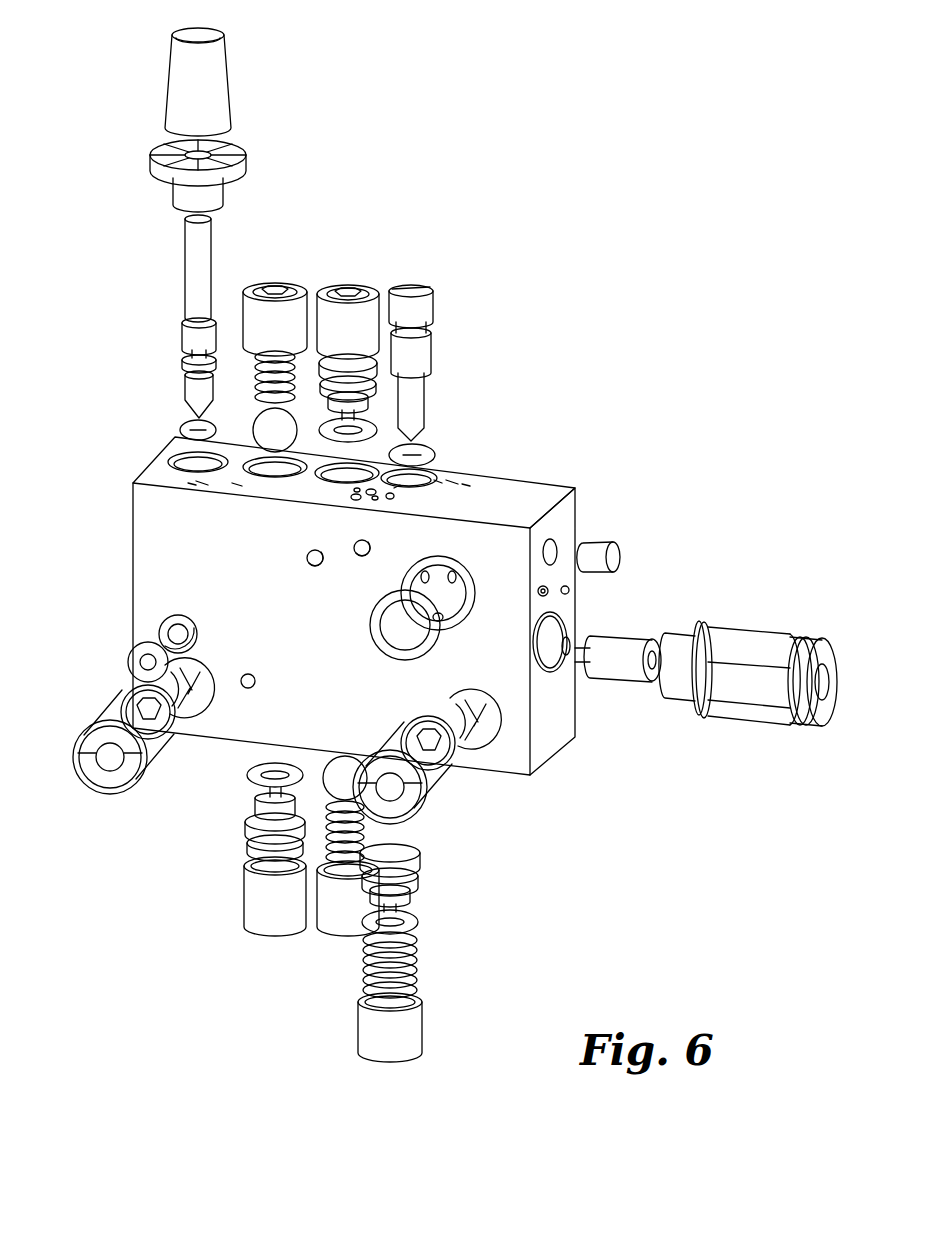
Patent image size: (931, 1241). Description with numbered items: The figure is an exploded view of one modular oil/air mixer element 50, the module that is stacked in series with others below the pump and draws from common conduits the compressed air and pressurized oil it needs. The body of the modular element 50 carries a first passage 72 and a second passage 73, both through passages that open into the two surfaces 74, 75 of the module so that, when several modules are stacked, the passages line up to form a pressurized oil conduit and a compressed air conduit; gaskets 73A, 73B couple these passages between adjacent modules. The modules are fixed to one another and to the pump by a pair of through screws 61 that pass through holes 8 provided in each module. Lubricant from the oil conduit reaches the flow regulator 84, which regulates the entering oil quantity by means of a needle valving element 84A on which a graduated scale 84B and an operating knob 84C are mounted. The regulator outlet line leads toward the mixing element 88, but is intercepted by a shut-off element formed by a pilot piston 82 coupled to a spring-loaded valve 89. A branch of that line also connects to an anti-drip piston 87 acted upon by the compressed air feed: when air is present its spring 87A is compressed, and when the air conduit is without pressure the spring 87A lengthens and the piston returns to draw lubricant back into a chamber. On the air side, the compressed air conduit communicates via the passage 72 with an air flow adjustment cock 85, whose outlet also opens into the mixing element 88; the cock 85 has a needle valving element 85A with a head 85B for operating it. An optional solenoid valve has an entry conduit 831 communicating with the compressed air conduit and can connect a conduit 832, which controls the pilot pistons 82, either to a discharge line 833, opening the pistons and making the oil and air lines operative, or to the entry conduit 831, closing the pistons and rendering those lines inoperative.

The modular element 50 is at (540, 326).
The surface of the modular element 74 is at (147, 514).
The surface of the modular element 75 is at (598, 512).
The flow regulator 84 is at (137, 130).
The needle valving element 84A is at (195, 290).
The graduated scale 84B is at (242, 170).
The operating knob 84C is at (213, 70).
The spring-loaded valve 89 is at (275, 272).
The pilot piston 82 is at (353, 272).
The air flow adjustment cock 85 is at (417, 258).
The needle valving element 85A is at (425, 408).
The head 85B is at (423, 283).
The entry conduit 831 is at (347, 480).
The conduit 832 is at (383, 490).
The discharge line 833 is at (398, 492).
The first passage 72 is at (455, 600).
The gasket 73B is at (397, 647).
The second passage 73 is at (163, 622).
The gasket 73A is at (133, 660).
The holes 8 is at (196, 728).
The through screws 61 is at (122, 707).
The mixing element 88 is at (752, 644).
The anti-drip piston 87 is at (393, 1063).
The spring 87A is at (420, 963).